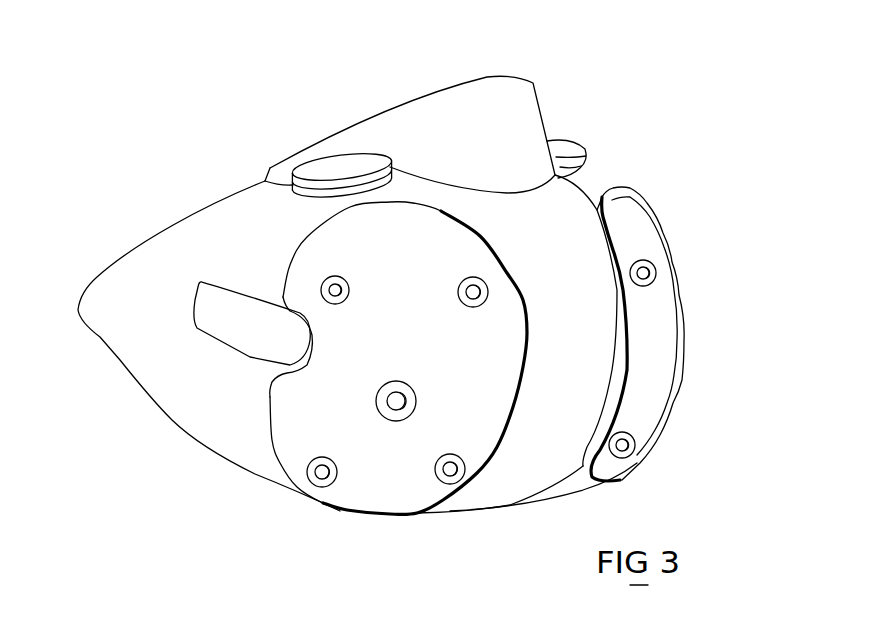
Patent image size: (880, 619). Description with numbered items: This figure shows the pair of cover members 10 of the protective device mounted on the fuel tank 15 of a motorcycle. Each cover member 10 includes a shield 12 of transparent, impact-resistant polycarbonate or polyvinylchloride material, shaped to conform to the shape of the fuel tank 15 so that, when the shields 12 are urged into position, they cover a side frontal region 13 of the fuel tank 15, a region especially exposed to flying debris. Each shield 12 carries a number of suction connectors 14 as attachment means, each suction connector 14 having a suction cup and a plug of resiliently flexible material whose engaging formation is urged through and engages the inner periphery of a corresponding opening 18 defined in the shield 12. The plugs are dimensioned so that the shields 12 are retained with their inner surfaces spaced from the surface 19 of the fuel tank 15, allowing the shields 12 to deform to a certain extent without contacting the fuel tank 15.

The cover member 10 is at (713, 256).
The shield 12 is at (282, 435).
The side frontal region 13 is at (350, 353).
The suction connector 14 is at (350, 290).
The fuel tank 15 is at (182, 223).
The opening 18 is at (320, 289).
The surface of the fuel tank 19 is at (373, 247).